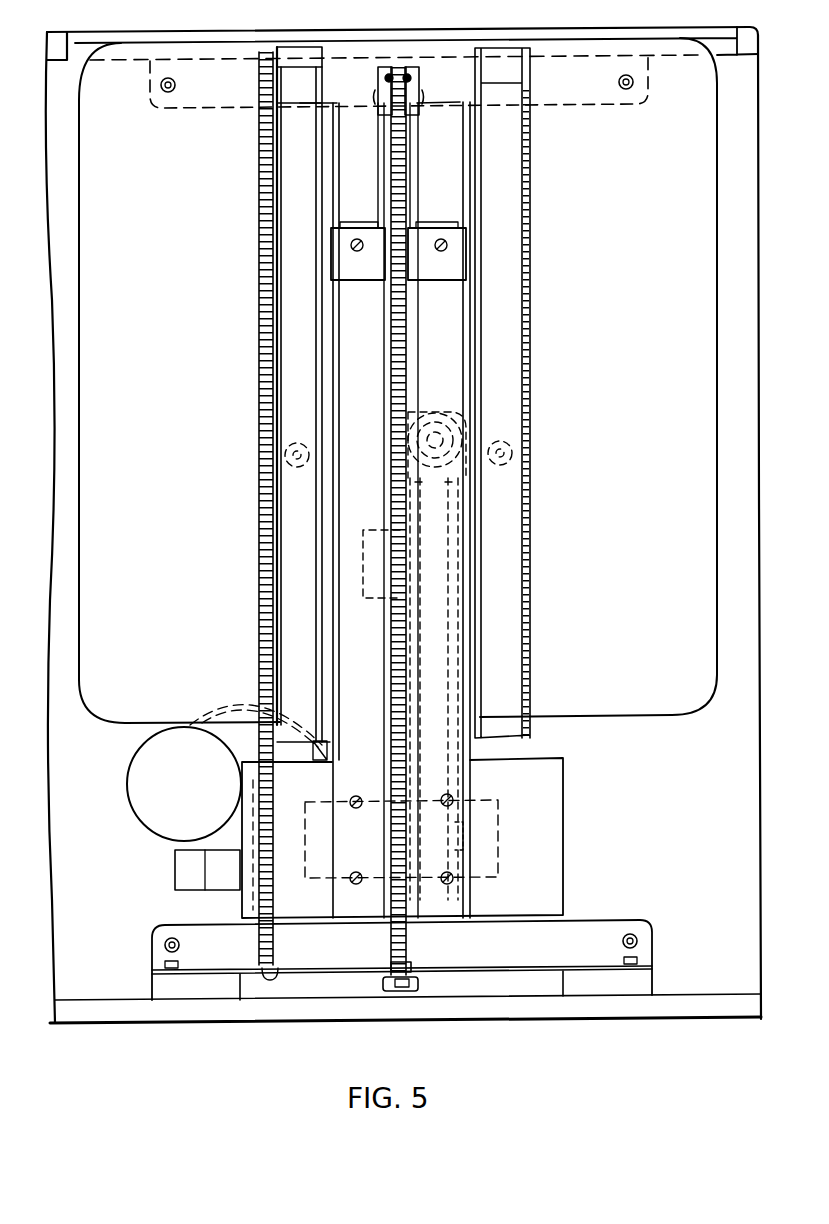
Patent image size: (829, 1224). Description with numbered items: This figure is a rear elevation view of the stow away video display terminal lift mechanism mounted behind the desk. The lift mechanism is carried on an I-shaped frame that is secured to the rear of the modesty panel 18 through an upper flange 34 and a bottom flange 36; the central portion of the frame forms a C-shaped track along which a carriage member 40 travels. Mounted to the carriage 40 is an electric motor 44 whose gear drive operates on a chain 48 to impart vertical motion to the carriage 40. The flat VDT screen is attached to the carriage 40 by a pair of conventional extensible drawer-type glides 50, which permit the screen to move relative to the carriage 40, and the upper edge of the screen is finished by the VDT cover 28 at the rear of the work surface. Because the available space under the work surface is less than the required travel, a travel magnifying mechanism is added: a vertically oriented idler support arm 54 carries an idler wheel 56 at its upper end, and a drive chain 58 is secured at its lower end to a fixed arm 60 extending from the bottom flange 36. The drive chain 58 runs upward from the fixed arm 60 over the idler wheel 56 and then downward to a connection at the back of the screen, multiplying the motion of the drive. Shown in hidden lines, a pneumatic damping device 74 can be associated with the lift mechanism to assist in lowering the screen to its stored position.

The modesty panel 18 is at (752, 845).
The VDT cover 28 is at (542, 27).
The flange 34 is at (212, 82).
The flange 36 is at (580, 932).
The carriage member 40 is at (540, 800).
The electric motor 44 is at (152, 812).
The chain 48 is at (260, 338).
The extensible drawer-type glides 50 is at (288, 256).
The idler support arm 54 is at (390, 70).
The idler wheel 56 is at (410, 70).
The drive chain 58 is at (397, 67).
The fixed arm 60 is at (380, 983).
The pneumatic damping device 74 is at (437, 552).